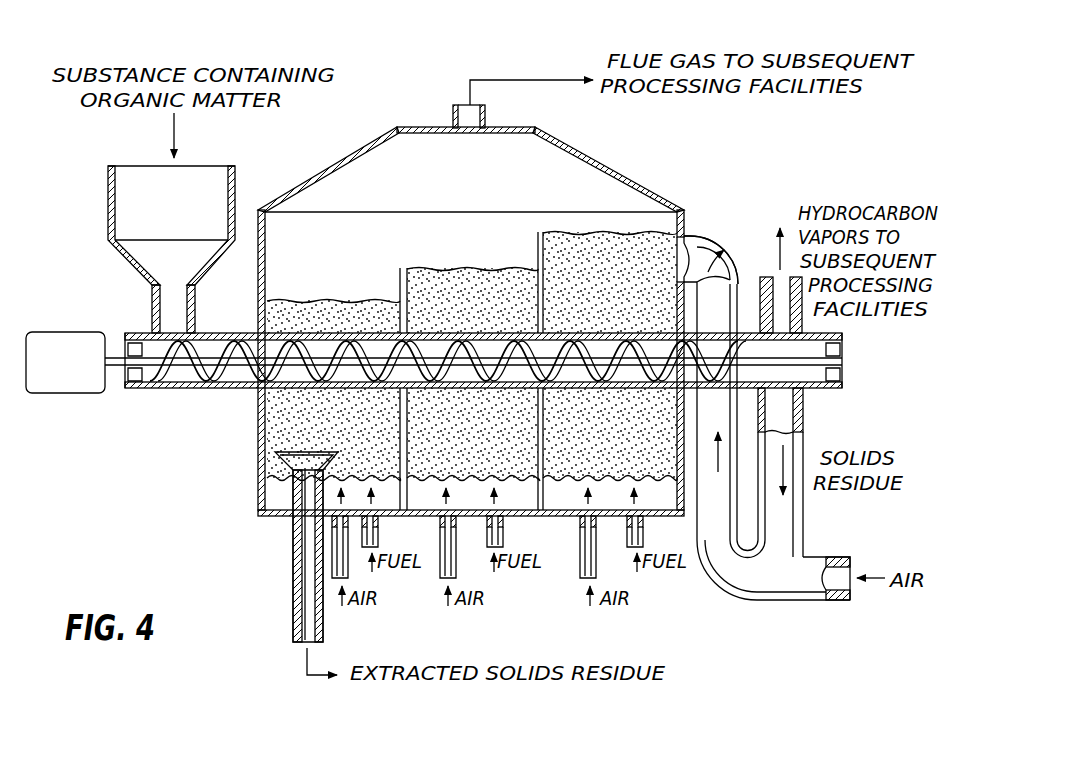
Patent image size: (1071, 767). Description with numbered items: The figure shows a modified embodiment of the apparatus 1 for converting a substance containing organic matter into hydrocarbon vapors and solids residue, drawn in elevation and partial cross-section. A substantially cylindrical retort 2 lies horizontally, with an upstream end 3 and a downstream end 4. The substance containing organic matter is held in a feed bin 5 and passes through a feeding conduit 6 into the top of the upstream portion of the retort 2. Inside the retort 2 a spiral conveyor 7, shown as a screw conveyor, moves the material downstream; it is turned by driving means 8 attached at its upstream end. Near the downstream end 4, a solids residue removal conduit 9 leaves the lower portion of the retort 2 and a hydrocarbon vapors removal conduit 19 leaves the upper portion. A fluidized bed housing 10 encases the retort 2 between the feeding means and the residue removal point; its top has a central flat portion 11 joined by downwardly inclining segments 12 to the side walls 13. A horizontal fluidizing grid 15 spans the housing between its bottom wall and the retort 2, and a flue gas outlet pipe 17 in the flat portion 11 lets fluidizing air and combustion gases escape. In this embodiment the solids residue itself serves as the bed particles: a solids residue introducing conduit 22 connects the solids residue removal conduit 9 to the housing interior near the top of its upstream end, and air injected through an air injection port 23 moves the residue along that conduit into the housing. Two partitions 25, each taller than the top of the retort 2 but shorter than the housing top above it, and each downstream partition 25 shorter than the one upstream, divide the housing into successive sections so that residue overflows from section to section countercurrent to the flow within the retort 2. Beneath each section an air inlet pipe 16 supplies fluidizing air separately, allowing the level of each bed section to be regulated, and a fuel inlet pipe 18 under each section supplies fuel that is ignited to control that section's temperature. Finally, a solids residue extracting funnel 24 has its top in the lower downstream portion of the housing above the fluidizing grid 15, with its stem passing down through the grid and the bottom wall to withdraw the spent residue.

The apparatus 1 is at (641, 182).
The retort 2 is at (200, 392).
The upstream end 3 is at (128, 392).
The downstream end 4 is at (843, 378).
The feed bin 5 is at (108, 222).
The feeding conduit 6 is at (152, 308).
The spiral conveyor 7 is at (782, 367).
The driving means 8 is at (70, 396).
The solids residue removal conduit 9 is at (805, 413).
The fluidized bed housing 10 is at (694, 211).
The flat portion 11 is at (508, 129).
The downwardly inclining segments 12 is at (350, 156).
The side walls 13 is at (258, 289).
The fluidizing grid 15 is at (274, 486).
The air inlet pipe 16 is at (350, 570).
The flue gas outlet pipe 17 is at (453, 112).
The fuel inlet pipe 18 is at (380, 526).
The hydrocarbon vapors removal conduit 19 is at (803, 323).
The solids residue introducing conduit 22 is at (805, 520).
The air injection port 23 is at (852, 592).
The solids residue extracting funnel 24 is at (293, 584).
The partition 25 is at (374, 284).